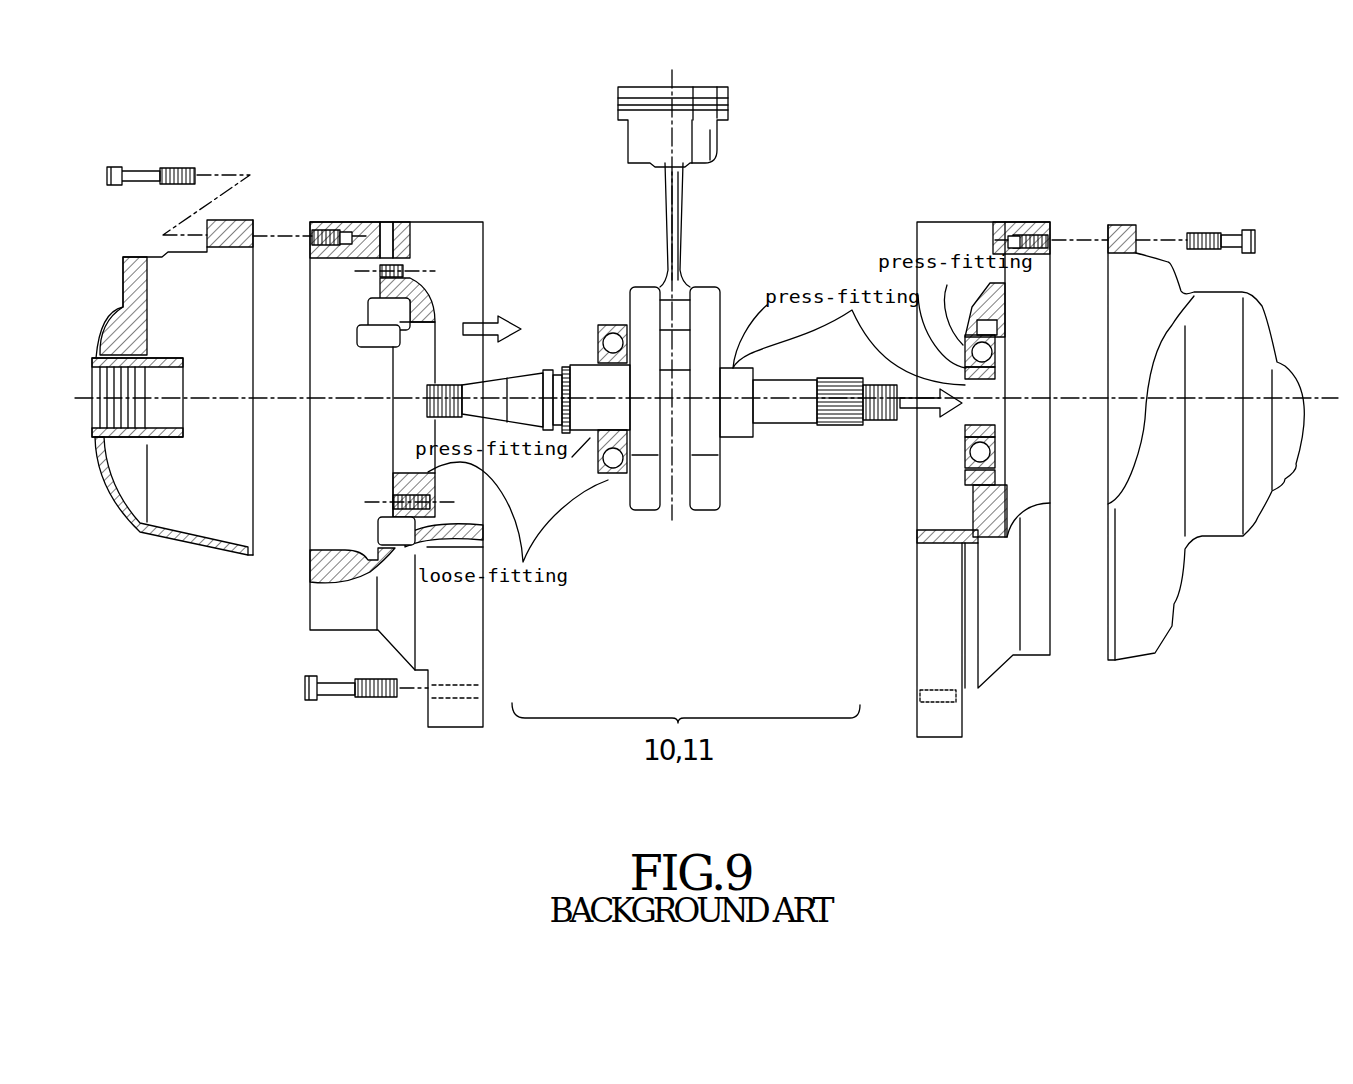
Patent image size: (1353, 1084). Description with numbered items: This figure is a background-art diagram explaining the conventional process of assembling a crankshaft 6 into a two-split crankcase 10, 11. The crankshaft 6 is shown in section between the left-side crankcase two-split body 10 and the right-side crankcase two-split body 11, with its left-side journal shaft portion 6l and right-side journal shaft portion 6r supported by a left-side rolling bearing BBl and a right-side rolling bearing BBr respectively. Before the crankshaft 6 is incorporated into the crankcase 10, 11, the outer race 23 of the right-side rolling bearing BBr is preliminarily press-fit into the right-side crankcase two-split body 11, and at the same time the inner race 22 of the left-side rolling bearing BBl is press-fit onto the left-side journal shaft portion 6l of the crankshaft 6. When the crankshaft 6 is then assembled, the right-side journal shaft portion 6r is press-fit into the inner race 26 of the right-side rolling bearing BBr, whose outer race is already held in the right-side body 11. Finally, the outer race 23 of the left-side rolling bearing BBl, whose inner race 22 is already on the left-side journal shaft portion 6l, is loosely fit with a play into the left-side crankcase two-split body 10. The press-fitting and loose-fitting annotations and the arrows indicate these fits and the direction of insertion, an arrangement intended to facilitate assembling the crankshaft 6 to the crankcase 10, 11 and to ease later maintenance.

The crankshaft 6 is at (662, 339).
The left-side journal shaft portion 6l is at (597, 383).
The right-side journal shaft portion 6r is at (778, 280).
The inner race 22 is at (593, 372).
The outer race 23 is at (606, 325).
The inner race 26 is at (902, 250).
The left-side crankcase two-split body 10 is at (462, 598).
The right-side crankcase two-split body 11 is at (974, 440).
The left-side rolling bearing BBl is at (841, 388).
The right-side rolling bearing BBr is at (958, 467).